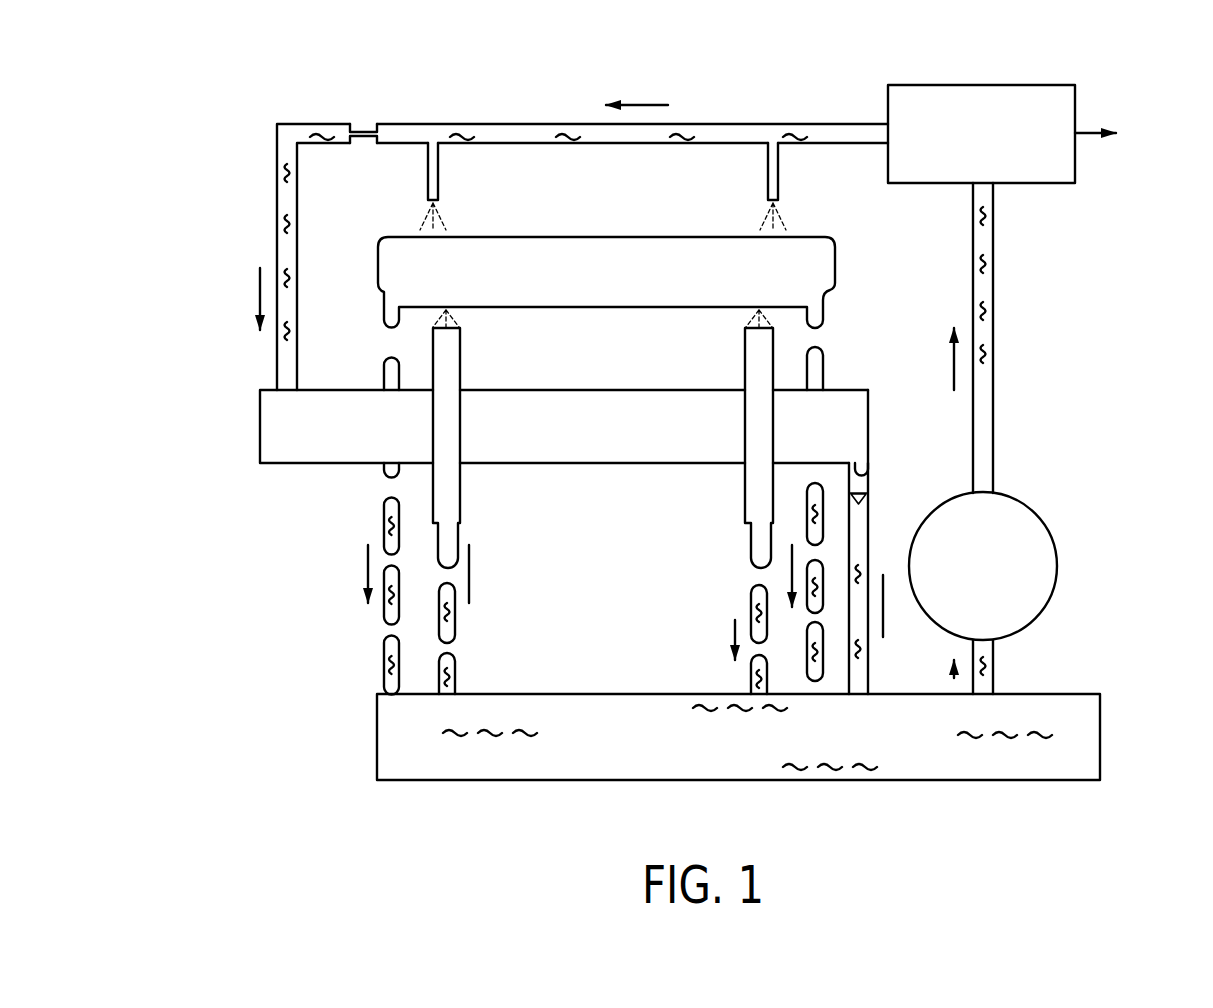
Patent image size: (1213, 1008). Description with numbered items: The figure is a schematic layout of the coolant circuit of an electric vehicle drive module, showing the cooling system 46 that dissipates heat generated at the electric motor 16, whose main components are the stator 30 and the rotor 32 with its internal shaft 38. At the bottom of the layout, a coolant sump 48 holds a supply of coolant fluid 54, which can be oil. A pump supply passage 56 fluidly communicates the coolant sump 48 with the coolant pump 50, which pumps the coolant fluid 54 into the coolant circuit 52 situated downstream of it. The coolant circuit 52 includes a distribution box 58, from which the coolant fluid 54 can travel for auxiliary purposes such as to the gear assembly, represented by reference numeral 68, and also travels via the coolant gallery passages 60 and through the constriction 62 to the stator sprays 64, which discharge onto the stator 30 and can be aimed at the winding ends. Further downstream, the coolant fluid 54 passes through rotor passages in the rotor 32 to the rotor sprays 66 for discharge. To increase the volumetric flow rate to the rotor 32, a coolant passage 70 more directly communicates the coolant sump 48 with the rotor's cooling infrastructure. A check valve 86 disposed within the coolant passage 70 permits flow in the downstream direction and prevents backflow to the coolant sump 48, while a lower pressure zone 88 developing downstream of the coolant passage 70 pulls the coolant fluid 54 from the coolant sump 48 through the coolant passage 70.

The electric motor 16 is at (352, 486).
The stator 30 is at (605, 257).
The rotor 32 is at (604, 432).
The internal shaft 38 is at (850, 423).
The cooling system 46 is at (222, 169).
The coolant sump 48 is at (603, 733).
The coolant pump 50 is at (1023, 565).
The coolant circuit 52 is at (537, 110).
The coolant fluid 54 is at (462, 135).
The pump supply passage 56 is at (995, 665).
The distribution box 58 is at (982, 85).
The coolant gallery passages 60 is at (712, 123).
The constriction 62 is at (363, 128).
The stator sprays 64 is at (437, 201).
The rotor sprays 66 is at (462, 333).
The gear assembly coolant flow 68 is at (1178, 148).
The coolant passage 70 is at (868, 543).
The check valve 86 is at (876, 500).
The lower pressure zone 88 is at (856, 473).